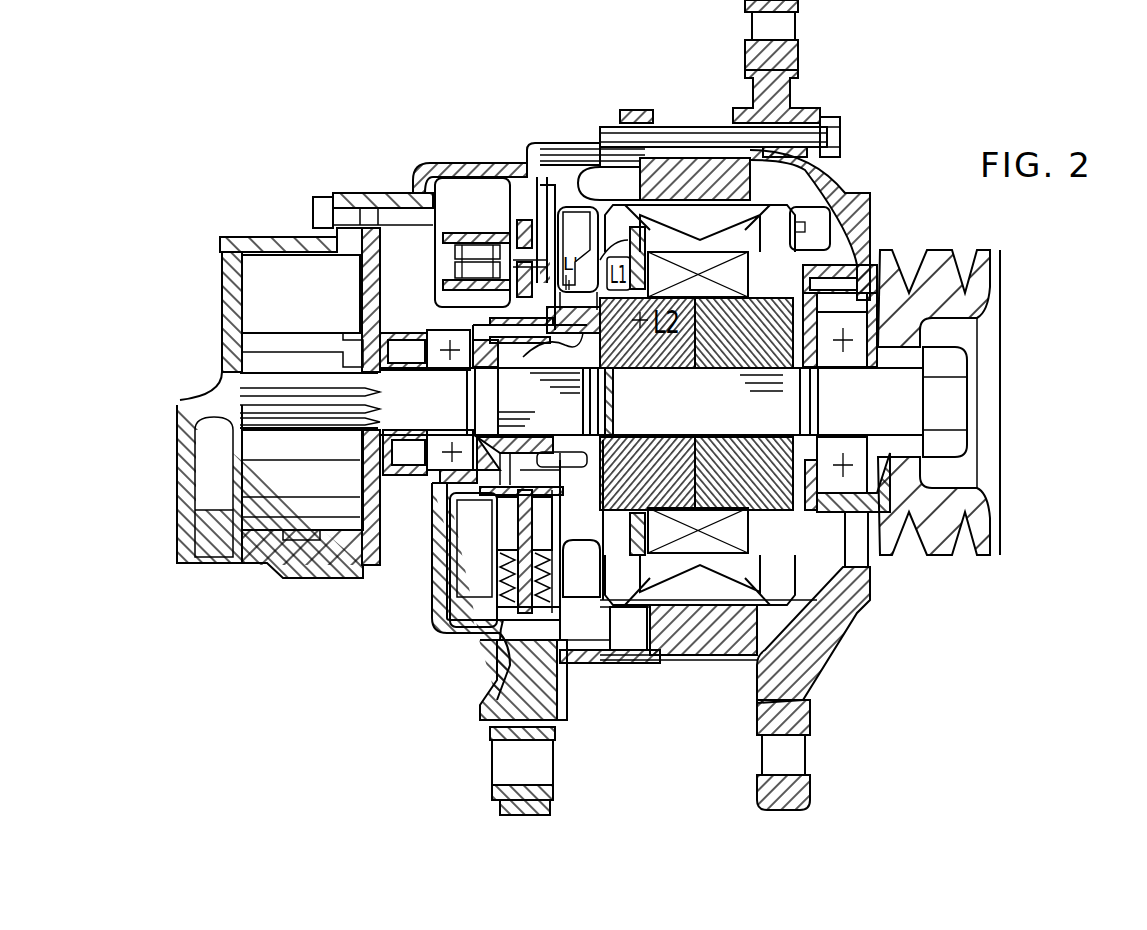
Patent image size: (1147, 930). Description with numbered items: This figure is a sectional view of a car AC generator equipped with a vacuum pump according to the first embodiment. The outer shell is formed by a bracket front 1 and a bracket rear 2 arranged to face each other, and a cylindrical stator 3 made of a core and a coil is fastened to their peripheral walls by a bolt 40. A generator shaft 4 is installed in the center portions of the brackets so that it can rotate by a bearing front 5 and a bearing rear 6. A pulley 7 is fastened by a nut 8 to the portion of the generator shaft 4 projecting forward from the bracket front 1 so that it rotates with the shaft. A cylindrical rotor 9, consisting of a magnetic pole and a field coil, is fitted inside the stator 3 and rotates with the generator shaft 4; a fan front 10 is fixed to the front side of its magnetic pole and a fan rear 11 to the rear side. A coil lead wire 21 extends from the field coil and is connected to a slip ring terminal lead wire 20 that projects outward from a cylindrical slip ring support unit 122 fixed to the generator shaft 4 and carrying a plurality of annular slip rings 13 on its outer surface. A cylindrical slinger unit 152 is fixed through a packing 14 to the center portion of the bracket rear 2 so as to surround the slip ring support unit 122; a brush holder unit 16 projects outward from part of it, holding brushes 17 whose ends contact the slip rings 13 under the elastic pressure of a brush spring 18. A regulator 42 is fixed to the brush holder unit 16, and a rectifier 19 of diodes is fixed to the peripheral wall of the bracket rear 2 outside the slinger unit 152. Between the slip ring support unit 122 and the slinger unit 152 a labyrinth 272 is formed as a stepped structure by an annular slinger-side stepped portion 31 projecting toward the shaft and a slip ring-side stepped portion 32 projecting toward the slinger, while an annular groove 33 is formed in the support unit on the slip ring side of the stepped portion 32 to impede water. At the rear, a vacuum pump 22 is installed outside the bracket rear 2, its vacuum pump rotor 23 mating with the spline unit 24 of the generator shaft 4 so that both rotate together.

The bracket front 1 is at (807, 112).
The bracket rear 2 is at (427, 175).
The stator 3 is at (722, 637).
The generator shaft 4 is at (905, 415).
The bearing front 5 is at (857, 480).
The bearing rear 6 is at (433, 457).
The pulley 7 is at (985, 273).
The nut 8 is at (950, 393).
The rotor 9 is at (688, 543).
The fan front 10 is at (820, 590).
The fan rear 11 is at (600, 613).
The slip rings 13 is at (447, 597).
The packing 14 is at (467, 230).
The slinger unit 152 is at (482, 230).
The brush holder unit 16 is at (477, 570).
The brushes 17 is at (470, 623).
The brush spring 18 is at (567, 687).
The rectifier 19 is at (450, 230).
The slip ring terminal lead wire 20 is at (620, 133).
The coil lead wire 21 is at (600, 663).
The vacuum pump 22 is at (272, 565).
The vacuum pump rotor 23 is at (330, 470).
The spline unit 24 is at (265, 400).
The labyrinth 272 is at (560, 230).
The slinger-side stepped portion 31 is at (530, 230).
The slip ring-side stepped portion 32 is at (633, 372).
The annular groove 33 is at (620, 367).
The bolt 40 is at (840, 137).
The regulator 42 is at (440, 627).
The slip ring support unit 122 is at (433, 520).